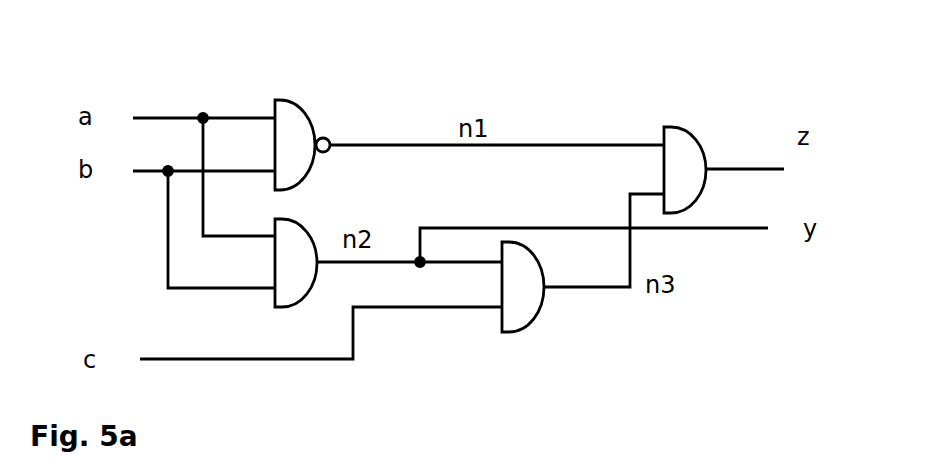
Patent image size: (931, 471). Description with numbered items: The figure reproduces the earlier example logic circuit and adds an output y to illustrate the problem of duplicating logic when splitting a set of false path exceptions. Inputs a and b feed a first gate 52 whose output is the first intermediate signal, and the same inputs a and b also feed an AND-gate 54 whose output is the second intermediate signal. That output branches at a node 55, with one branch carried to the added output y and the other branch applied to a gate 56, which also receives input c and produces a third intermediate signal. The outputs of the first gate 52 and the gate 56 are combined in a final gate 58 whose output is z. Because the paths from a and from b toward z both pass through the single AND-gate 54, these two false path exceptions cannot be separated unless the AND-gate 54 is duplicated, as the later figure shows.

The NAND gate 52 is at (302, 133).
The AND-gate 54 is at (303, 243).
The node 55 is at (417, 255).
The gate 56 is at (532, 287).
The AND gate 58 is at (685, 145).